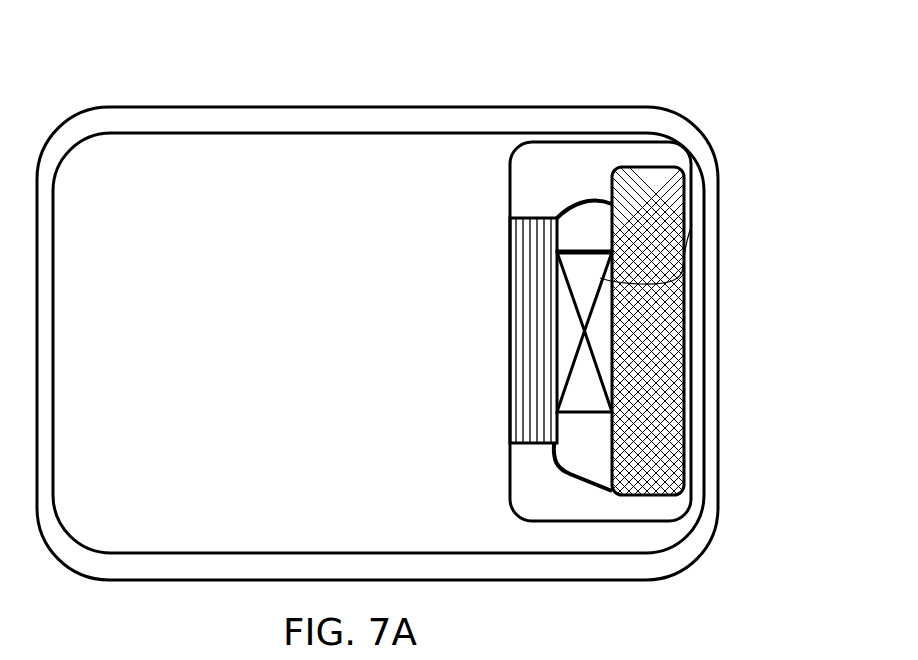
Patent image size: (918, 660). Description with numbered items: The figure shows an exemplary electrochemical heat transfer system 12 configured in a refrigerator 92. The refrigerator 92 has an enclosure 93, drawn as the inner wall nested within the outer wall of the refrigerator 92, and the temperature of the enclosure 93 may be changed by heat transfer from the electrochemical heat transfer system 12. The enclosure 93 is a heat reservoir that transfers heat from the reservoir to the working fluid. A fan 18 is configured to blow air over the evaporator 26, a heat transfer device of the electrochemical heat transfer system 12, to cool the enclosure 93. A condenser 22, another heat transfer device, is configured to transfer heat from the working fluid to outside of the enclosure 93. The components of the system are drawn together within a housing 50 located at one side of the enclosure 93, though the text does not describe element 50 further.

The refrigerator 92 is at (130, 187).
The enclosure 93 is at (243, 187).
The bracket frame 50 is at (583, 197).
The evaporator 26 is at (534, 233).
The condenser 22 is at (650, 360).
The electrochemical heat transfer system 12 is at (669, 193).
The fan 18 is at (692, 225).